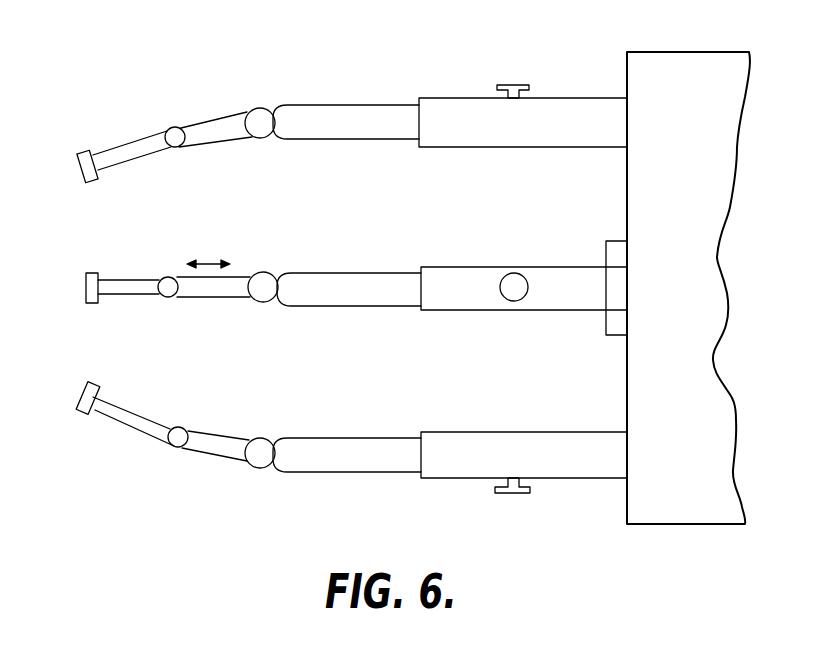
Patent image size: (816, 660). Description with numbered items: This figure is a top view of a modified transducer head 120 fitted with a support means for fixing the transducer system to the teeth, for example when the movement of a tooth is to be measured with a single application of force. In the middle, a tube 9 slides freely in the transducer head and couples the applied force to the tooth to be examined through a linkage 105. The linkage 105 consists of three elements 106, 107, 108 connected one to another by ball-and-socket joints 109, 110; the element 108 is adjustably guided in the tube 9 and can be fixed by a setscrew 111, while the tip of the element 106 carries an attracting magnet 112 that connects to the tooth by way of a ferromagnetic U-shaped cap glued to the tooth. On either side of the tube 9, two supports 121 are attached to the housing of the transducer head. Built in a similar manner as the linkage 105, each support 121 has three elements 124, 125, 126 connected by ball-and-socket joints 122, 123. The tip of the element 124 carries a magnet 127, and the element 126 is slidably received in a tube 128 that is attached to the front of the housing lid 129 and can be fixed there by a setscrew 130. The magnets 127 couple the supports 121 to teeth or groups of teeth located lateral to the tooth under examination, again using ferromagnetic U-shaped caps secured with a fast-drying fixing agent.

The transducer head 120 is at (699, 52).
The housing lid 129 is at (627, 183).
The tube 128 is at (440, 98).
The setscrew 130 is at (513, 85).
The tube 9 is at (447, 267).
The setscrew 111 is at (514, 273).
The supports 121 is at (231, 283).
The magnet 127 is at (83, 172).
The element 124 is at (142, 150).
The ball-and-socket joint 122 is at (174, 127).
The element 125 is at (220, 130).
The ball-and-socket joint 123 is at (258, 108).
The element 126 is at (358, 128).
The linkage 105 is at (231, 274).
The attracting magnet 112 is at (90, 272).
The element 106 is at (141, 294).
The ball-and-socket joint 109 is at (166, 277).
The element 107 is at (220, 297).
The ball-and-socket joint 110 is at (265, 272).
The element 108 is at (365, 306).